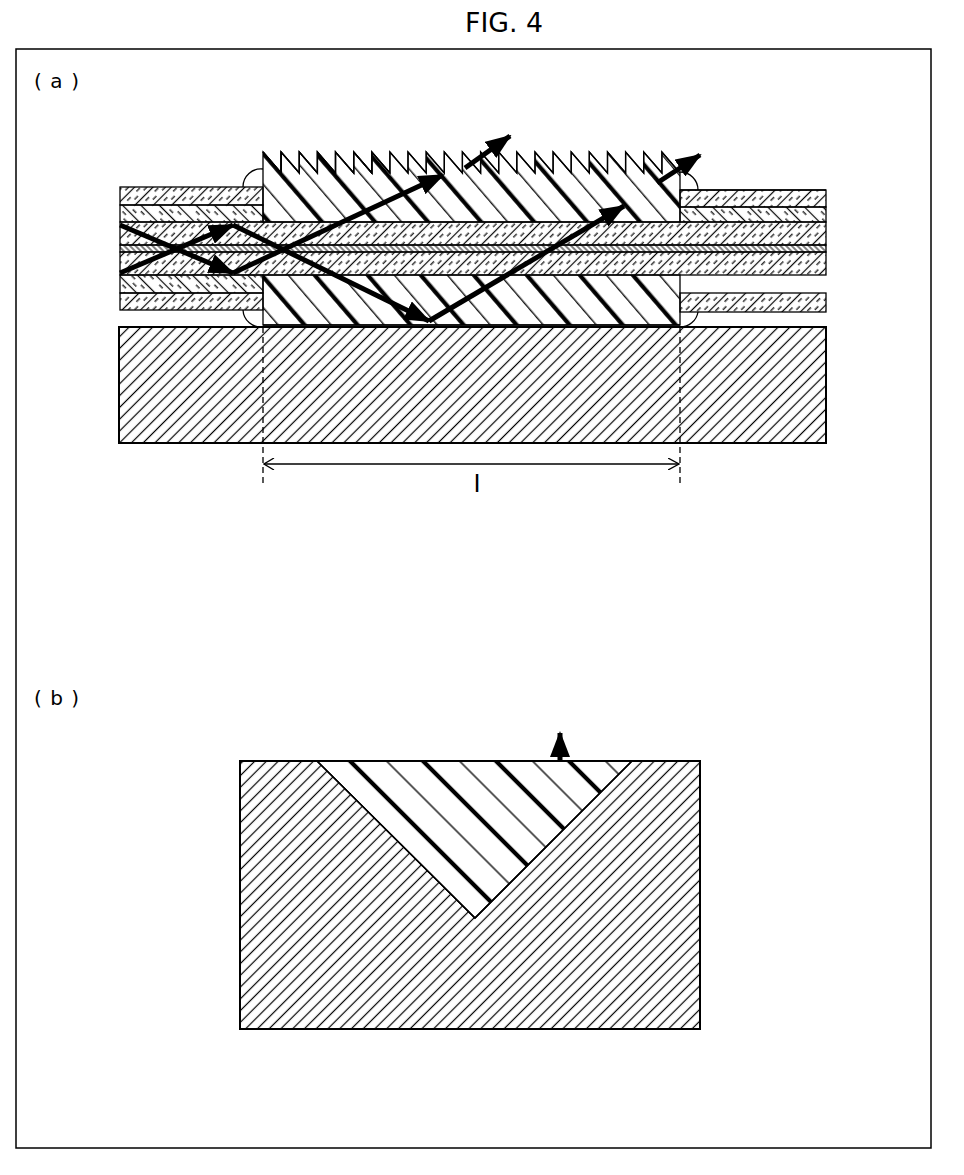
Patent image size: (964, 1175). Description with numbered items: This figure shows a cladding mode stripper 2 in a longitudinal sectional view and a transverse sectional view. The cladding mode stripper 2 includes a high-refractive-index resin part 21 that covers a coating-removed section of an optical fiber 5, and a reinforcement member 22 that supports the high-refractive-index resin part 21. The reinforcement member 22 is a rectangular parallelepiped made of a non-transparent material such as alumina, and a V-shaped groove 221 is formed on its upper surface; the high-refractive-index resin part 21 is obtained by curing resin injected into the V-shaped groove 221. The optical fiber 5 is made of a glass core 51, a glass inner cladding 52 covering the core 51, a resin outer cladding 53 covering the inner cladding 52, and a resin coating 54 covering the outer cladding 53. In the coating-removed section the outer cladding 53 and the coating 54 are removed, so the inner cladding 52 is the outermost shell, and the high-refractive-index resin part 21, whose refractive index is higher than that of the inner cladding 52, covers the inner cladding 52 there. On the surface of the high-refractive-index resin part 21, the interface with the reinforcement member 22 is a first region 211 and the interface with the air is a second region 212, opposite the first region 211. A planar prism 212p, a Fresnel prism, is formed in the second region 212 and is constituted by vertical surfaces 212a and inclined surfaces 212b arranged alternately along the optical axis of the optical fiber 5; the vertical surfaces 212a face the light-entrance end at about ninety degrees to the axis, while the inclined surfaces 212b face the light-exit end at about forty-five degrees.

The cladding mode stripper 2 is at (850, 134).
The optical fiber 5 is at (826, 248).
The high-refractive-index resin part 21 is at (598, 166).
The reinforcement member 22 is at (826, 398).
The core 51 is at (667, 247).
The inner cladding 52 is at (708, 220).
The outer cladding 53 is at (754, 203).
The coating 54 is at (798, 195).
The first region 211 is at (516, 323).
The second region 212 is at (559, 172).
The vertical surfaces 212a is at (283, 172).
The inclined surfaces 212b is at (363, 172).
The planar prism 212p is at (258, 112).
The V-shaped groove 221 is at (327, 770).